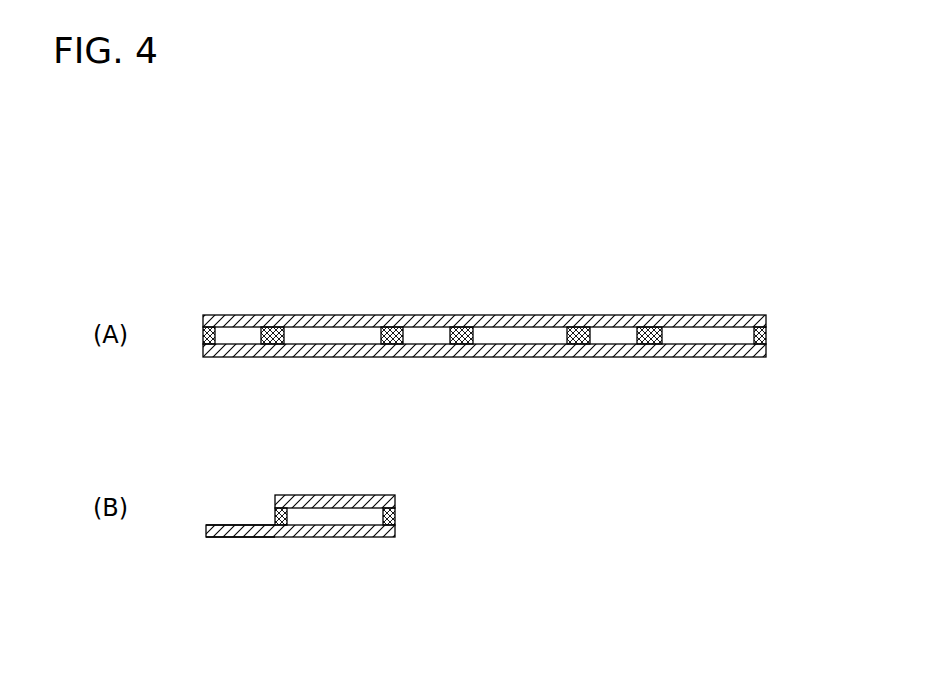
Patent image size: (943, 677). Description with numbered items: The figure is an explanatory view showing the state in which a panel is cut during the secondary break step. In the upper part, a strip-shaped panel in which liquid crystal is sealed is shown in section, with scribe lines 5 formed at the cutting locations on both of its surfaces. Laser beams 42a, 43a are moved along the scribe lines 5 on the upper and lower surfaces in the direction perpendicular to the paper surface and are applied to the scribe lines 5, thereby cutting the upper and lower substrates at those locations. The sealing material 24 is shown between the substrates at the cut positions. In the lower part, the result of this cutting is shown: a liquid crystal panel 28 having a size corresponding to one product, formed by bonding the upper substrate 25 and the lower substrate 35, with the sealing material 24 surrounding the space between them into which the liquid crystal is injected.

The scribe line 5 is at (277, 314).
The sealing material 24 is at (650, 358).
The upper substrate 25 is at (365, 495).
The liquid crystal panel 28 is at (258, 538).
The lower substrate 35 is at (375, 538).
The laser beam 42a is at (273, 266).
The laser beam 43a is at (397, 380).